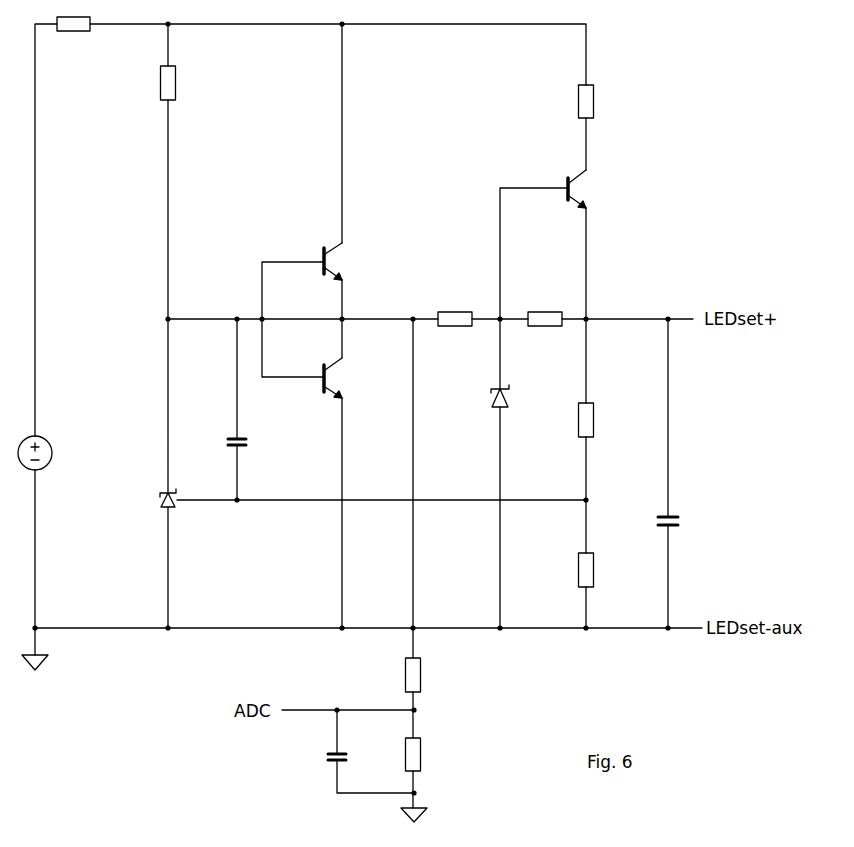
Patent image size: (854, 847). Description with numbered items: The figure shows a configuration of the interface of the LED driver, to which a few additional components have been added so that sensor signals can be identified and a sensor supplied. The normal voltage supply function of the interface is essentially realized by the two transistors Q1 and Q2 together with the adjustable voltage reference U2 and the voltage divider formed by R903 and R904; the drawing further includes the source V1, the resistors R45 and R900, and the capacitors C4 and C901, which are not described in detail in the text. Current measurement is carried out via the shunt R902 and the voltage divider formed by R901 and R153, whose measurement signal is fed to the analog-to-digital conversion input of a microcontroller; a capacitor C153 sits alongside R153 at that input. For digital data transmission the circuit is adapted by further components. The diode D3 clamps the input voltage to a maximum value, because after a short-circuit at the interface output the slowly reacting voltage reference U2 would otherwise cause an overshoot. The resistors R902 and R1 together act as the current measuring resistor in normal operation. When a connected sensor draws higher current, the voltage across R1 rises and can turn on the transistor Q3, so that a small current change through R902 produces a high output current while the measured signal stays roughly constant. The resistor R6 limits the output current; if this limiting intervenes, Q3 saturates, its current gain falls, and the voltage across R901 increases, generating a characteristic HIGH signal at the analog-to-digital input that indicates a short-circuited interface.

The resistor R45 is at (72, 42).
The resistor R900 is at (194, 83).
The resistor R6 is at (601, 101).
The transistor Q3 is at (591, 189).
The transistor Q1 is at (347, 261).
The transistor Q2 is at (347, 378).
The shunt R902 is at (458, 307).
The resistor R1 is at (545, 307).
The diode D3 is at (516, 397).
The resistor R903 is at (612, 420).
The resistor R904 is at (613, 570).
The capacitor C4 is at (254, 444).
The capacitor C901 is at (695, 521).
The voltage source V1 is at (52, 453).
The adjustable voltage reference U2 is at (151, 499).
The resistor R901 is at (440, 675).
The resistor R153 is at (440, 754).
The capacitor C153 is at (310, 757).